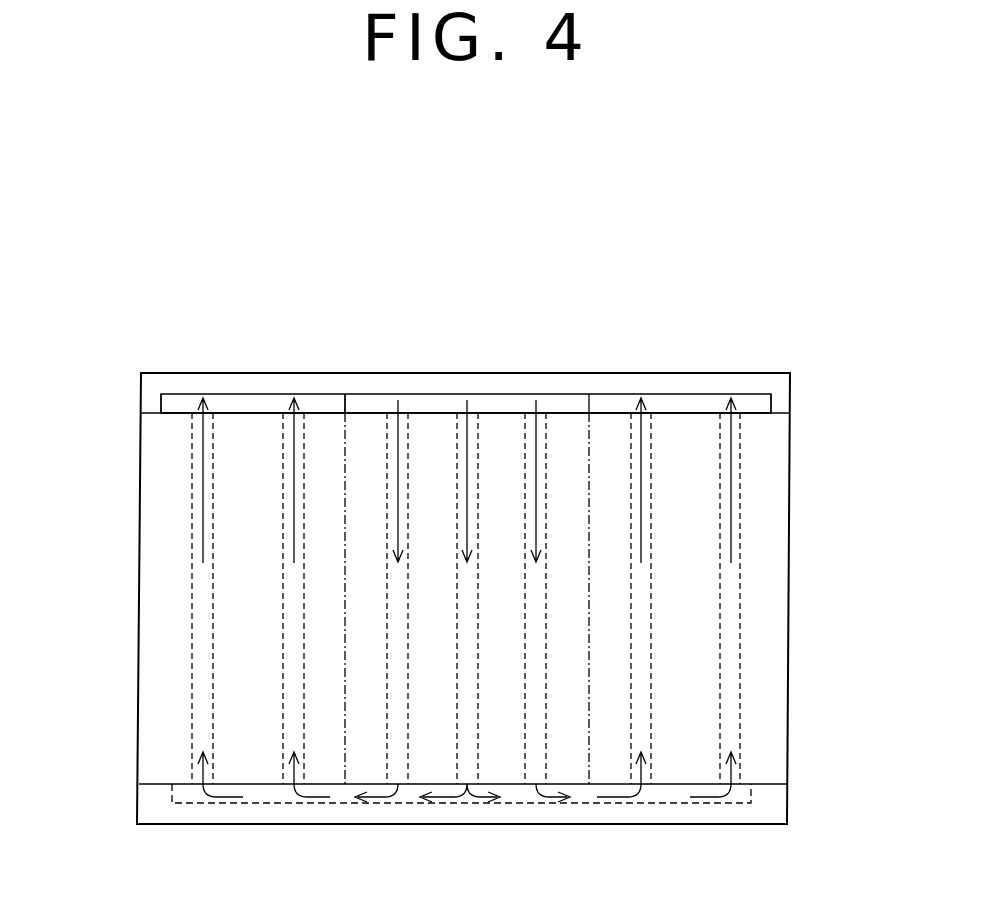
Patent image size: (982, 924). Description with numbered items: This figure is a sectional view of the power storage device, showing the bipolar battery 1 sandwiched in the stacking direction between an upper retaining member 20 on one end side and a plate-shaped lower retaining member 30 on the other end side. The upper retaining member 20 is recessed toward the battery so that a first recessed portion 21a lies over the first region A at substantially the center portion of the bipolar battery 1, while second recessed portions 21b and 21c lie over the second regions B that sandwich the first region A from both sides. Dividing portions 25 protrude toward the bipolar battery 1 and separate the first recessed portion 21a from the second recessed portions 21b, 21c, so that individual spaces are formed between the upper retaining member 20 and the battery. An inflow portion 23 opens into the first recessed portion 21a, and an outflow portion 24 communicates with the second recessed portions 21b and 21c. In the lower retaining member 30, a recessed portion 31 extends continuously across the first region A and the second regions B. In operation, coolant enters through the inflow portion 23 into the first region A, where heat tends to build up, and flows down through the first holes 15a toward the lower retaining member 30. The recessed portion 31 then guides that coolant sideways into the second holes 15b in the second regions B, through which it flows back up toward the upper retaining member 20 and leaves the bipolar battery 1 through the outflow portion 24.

The bipolar battery 1 is at (793, 558).
The upper retaining member 20 is at (797, 378).
The lower retaining member 30 is at (795, 815).
The first recessed portion 21a is at (437, 392).
The second recessed portion 21b is at (240, 393).
The second recessed portion 21c is at (680, 392).
The inflow portion 23 is at (495, 408).
The outflow portion 24 is at (180, 403).
The dividing portion 25 is at (345, 402).
The recessed portion 31 is at (585, 806).
The first holes 15a is at (392, 618).
The second holes 15b is at (285, 678).
The first region A is at (353, 772).
The second regions B is at (148, 752).